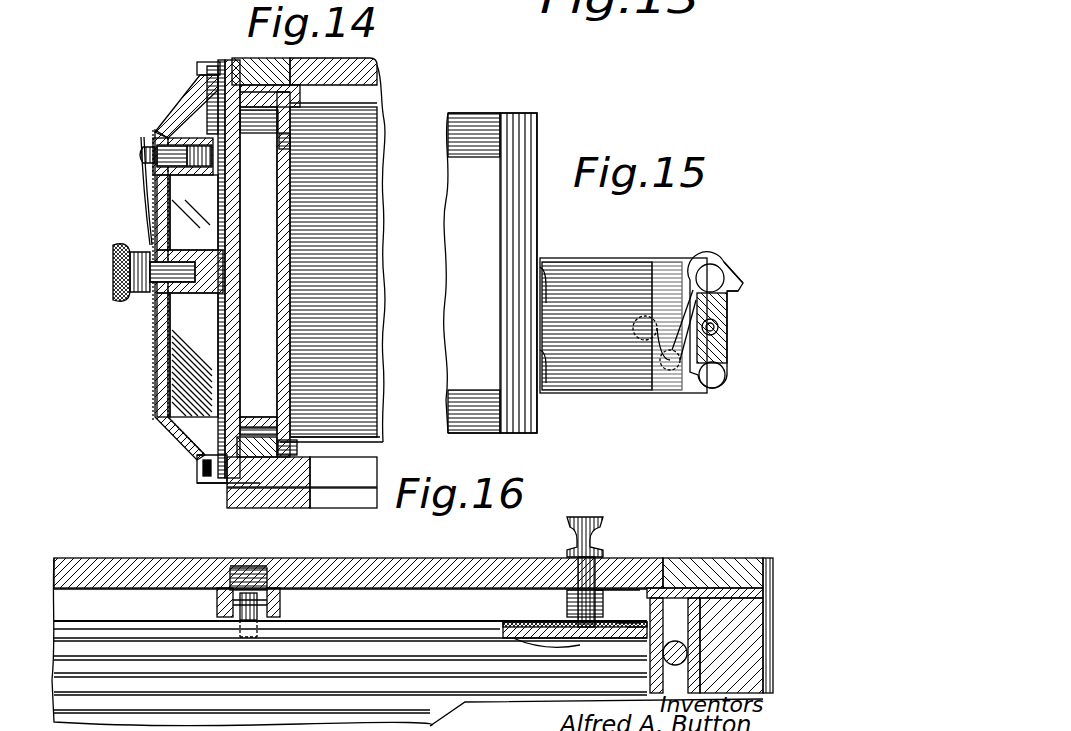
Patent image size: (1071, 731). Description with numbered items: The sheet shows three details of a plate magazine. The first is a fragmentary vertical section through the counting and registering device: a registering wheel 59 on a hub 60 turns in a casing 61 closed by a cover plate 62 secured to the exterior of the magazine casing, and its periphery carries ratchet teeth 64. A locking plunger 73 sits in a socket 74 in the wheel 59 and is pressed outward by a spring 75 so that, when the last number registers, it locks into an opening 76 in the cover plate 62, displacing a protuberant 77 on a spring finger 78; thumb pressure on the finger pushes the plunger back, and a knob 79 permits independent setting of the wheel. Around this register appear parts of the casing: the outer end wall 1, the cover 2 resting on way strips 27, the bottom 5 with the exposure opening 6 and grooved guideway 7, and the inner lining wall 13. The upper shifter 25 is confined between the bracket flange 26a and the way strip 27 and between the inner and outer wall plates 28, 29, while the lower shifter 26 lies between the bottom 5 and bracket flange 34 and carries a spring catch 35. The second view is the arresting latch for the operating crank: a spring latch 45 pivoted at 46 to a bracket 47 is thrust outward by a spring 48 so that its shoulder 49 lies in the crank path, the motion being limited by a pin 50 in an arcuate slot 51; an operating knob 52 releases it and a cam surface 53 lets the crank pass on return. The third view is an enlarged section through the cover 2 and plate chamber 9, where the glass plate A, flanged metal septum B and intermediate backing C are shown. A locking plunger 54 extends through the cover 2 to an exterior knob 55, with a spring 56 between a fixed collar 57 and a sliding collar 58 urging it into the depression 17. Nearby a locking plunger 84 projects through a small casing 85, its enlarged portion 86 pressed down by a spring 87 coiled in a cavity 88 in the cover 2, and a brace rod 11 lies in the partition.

In FIG. 15, the outer end wall 1 is at (527, 173).
In FIG. 16, the outer end wall 1 is at (773, 567).
In FIG. 14, the cover 2 is at (373, 67).
In FIG. 16, the cover 2 is at (483, 560).
In FIG. 14, the bottom 5 is at (315, 472).
In FIG. 14, the exposure opening 6 is at (337, 497).
In FIG. 14, the grooved guideway 7 is at (372, 495).
In FIG. 16, the plate chamber 9 is at (407, 642).
In FIG. 16, the transverse brace rod 11 is at (675, 641).
In FIG. 14, the inner metal lining wall 13 is at (367, 173).
In FIG. 16, the inner metal lining wall 13 is at (693, 603).
In FIG. 16, the depression 17 is at (503, 640).
In FIG. 14, the upper shifter 25 is at (292, 96).
In FIG. 14, the lower shifter 26 is at (195, 463).
In FIG. 14, the bracket flange 26a is at (310, 127).
In FIG. 14, the way strip 27 is at (270, 73).
In FIG. 14, the inner wall plate 28 is at (265, 274).
In FIG. 14, the outer wall plate 29 is at (237, 353).
In FIG. 14, the bracket flange 34 is at (258, 415).
In FIG. 14, the spring catch 35 is at (300, 447).
In FIG. 15, the spring latch 45 is at (723, 307).
In FIG. 15, the pivot 46 is at (713, 382).
In FIG. 15, the bracket 47 is at (623, 325).
In FIG. 15, the spring 48 is at (690, 313).
In FIG. 15, the shoulder 49 is at (735, 295).
In FIG. 15, the pin 50 is at (720, 332).
In FIG. 15, the arcuate slot 51 is at (697, 323).
In FIG. 15, the operating knob 52 is at (717, 270).
In FIG. 15, the cam surface 53 is at (730, 262).
In FIG. 16, the locking plunger 54 is at (577, 565).
In FIG. 16, the operating knob 55 is at (592, 517).
In FIG. 16, the spring 56 is at (567, 597).
In FIG. 16, the collar 57 is at (570, 622).
In FIG. 16, the sliding collar 58 is at (597, 590).
In FIG. 14, the registering wheel 59 is at (193, 97).
In FIG. 14, the hub 60 is at (183, 250).
In FIG. 14, the casing 61 is at (230, 200).
In FIG. 14, the cover plate 62 is at (155, 335).
In FIG. 14, the ratchet teeth 64 is at (213, 72).
In FIG. 14, the locking plunger 73 is at (155, 150).
In FIG. 14, the socket 74 is at (165, 200).
In FIG. 14, the spring 75 is at (280, 135).
In FIG. 14, the opening 76 is at (141, 165).
In FIG. 14, the protuberant 77 is at (142, 150).
In FIG. 14, the spring finger 78 is at (143, 183).
In FIG. 14, the knob 79 is at (113, 270).
In FIG. 16, the locking plunger 84 is at (277, 600).
In FIG. 16, the casing 85 is at (281, 605).
In FIG. 16, the enlarged portion 86 is at (220, 593).
In FIG. 16, the spring 87 is at (247, 573).
In FIG. 16, the cavity 88 is at (267, 570).
In FIG. 16, the glass plate A is at (617, 623).
In FIG. 16, the flanged metal septum B is at (627, 627).
In FIG. 16, the intermediate backing C is at (640, 627).